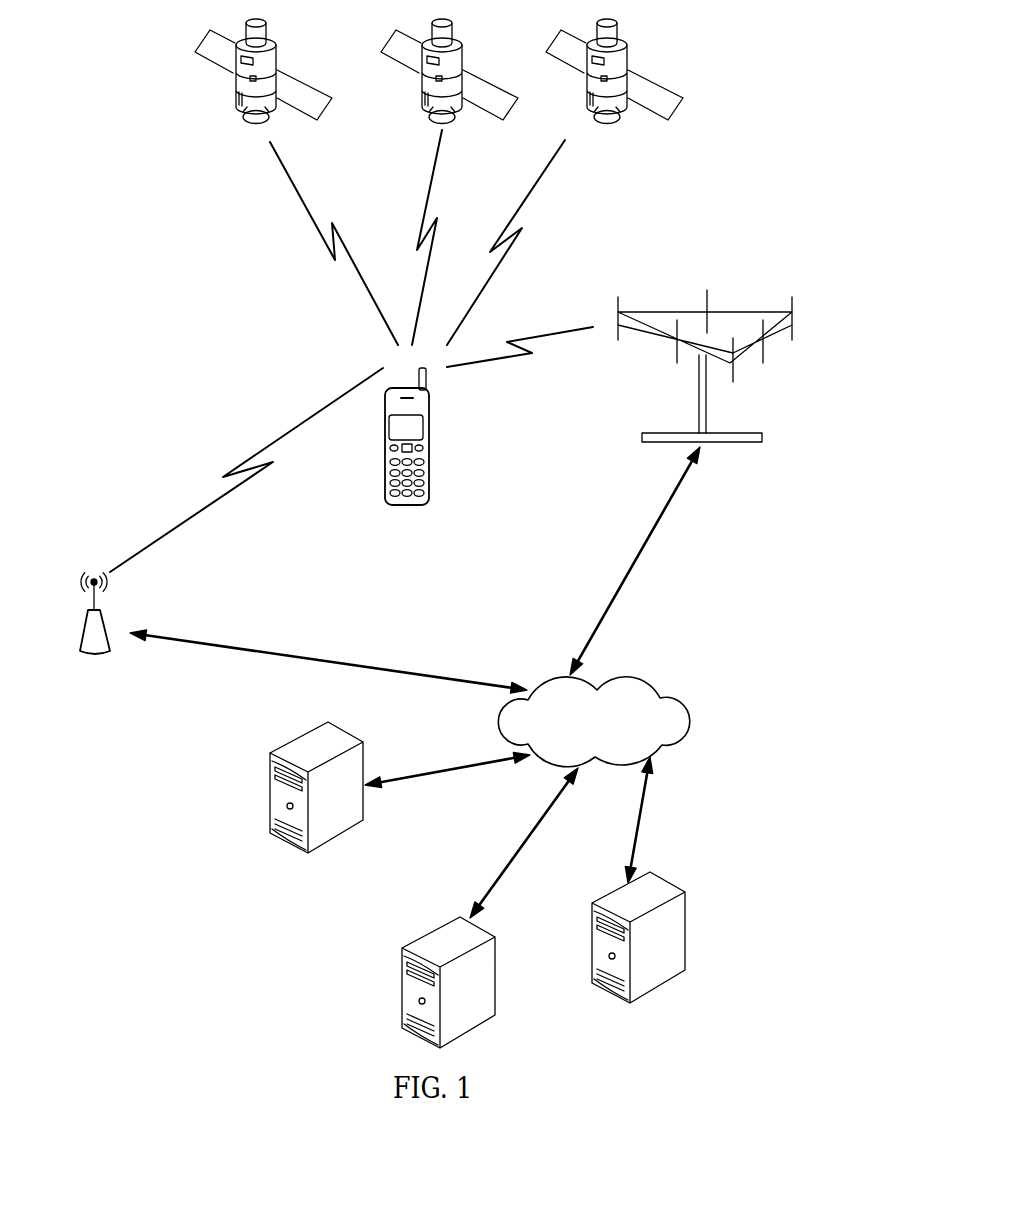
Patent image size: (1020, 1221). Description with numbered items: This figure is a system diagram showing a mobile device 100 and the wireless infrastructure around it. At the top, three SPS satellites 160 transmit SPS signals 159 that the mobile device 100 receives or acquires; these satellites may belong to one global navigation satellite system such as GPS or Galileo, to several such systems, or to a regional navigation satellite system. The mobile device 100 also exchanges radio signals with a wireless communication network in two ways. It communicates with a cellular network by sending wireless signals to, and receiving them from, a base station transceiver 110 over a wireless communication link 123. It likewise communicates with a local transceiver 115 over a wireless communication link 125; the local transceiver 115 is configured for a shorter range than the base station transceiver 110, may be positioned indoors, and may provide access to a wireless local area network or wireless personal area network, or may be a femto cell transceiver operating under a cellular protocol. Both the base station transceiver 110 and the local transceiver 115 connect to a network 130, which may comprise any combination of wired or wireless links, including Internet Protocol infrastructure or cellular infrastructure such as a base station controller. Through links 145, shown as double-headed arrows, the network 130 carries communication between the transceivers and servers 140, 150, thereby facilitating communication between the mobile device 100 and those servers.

The mobile device 100 is at (387, 447).
The base station transceiver 110 is at (735, 443).
The local transceiver 115 is at (95, 656).
The wireless communication link 123 is at (487, 358).
The wireless communication link 125 is at (178, 527).
The network 130 is at (680, 696).
The server 140 is at (330, 722).
The links 145 is at (285, 657).
The server 150 is at (685, 893).
The SPS signals 159 is at (300, 187).
The SPS satellites 160 is at (180, 86).